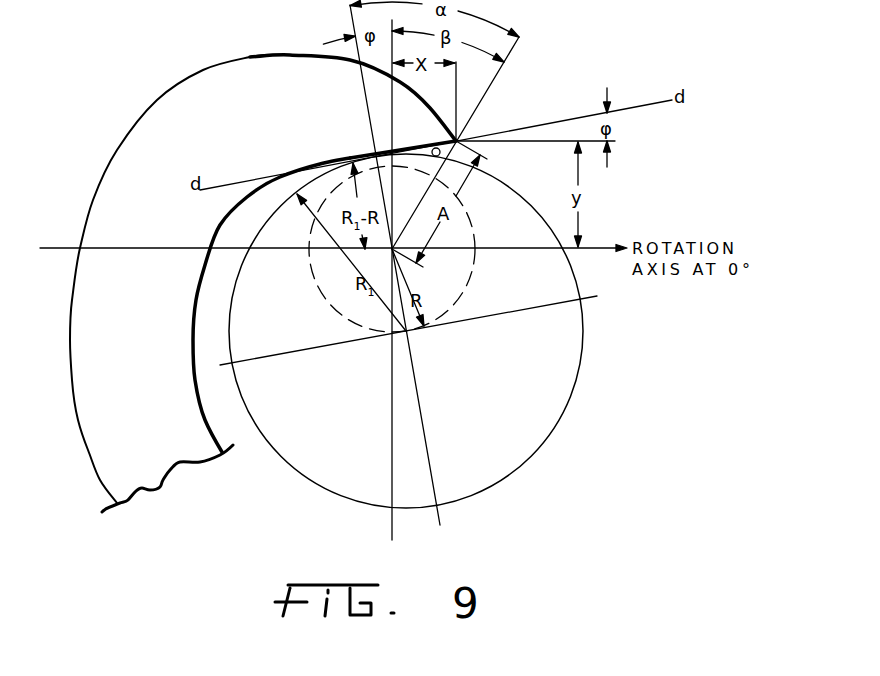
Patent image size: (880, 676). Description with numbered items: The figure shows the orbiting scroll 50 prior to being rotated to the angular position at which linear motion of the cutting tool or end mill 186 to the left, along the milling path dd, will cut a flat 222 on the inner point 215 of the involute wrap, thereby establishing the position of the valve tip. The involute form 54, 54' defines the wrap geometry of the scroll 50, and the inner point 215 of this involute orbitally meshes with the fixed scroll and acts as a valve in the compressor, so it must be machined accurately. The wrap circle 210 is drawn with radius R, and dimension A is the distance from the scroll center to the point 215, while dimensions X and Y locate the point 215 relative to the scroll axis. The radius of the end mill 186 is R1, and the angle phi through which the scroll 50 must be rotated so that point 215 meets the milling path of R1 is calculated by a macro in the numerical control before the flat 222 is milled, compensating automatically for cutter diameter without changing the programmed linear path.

The orbital scroll part 50 is at (244, 283).
The involute form 54 is at (174, 279).
The involute form 54' is at (226, 335).
The end mill 186 is at (553, 430).
The wrap circle 210 is at (468, 282).
The inner point 215 is at (468, 128).
The flat 222 is at (432, 145).